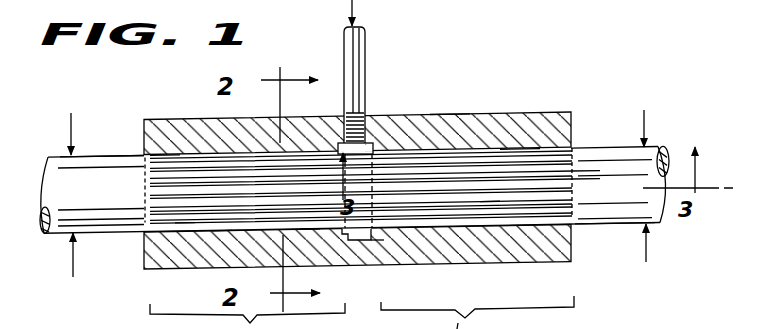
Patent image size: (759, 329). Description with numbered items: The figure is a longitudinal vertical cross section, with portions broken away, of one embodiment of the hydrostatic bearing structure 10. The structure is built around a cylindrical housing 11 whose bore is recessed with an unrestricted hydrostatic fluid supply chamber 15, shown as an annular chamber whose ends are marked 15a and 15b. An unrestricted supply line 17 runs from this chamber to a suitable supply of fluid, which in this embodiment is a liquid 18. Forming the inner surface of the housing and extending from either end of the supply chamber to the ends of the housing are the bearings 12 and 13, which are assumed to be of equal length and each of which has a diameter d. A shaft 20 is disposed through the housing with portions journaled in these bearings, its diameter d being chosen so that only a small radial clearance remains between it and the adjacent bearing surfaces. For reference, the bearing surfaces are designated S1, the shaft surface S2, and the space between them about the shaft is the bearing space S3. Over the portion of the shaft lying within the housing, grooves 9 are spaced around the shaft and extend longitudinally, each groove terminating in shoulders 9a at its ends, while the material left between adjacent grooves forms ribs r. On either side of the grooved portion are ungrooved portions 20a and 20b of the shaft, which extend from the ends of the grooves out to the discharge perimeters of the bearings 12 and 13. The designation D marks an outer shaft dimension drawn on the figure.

The grooves 9 is at (547, 197).
The shoulders 9a is at (573, 187).
The bearing structure 10 is at (447, 100).
The cylindrical housing 11 is at (568, 112).
The bearing 12 is at (166, 158).
The bearing 13 is at (516, 150).
The hydrostatic fluid supply chamber 15 is at (370, 142).
The end of supply chamber 15a is at (344, 231).
The end of supply chamber 15b is at (384, 263).
The supply line 17 is at (356, 65).
The liquid 18 is at (360, 18).
The shaft 20 is at (72, 190).
The ungrooved portion 20a is at (147, 216).
The ungrooved portion 20b is at (582, 218).
The bearing surfaces S1 is at (183, 223).
The shaft surface S2 is at (221, 237).
The bearing space S3 is at (310, 228).
The diameter d is at (70, 124).
The shaft diameter D is at (646, 122).
The ribs r is at (493, 203).